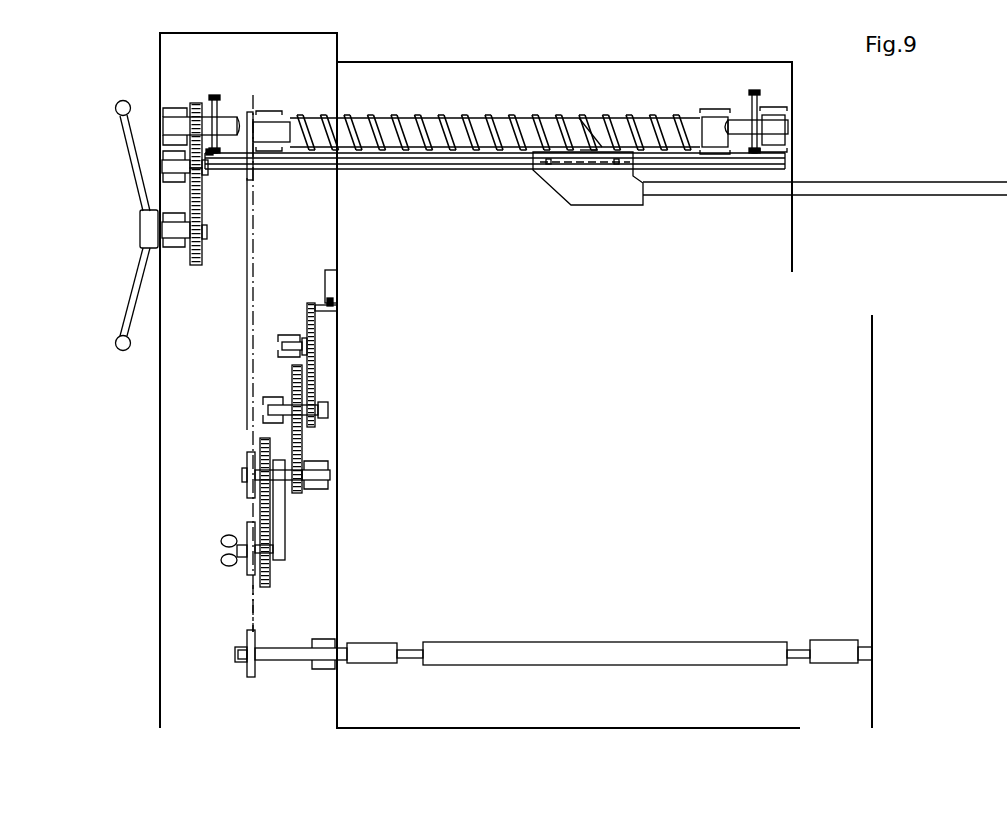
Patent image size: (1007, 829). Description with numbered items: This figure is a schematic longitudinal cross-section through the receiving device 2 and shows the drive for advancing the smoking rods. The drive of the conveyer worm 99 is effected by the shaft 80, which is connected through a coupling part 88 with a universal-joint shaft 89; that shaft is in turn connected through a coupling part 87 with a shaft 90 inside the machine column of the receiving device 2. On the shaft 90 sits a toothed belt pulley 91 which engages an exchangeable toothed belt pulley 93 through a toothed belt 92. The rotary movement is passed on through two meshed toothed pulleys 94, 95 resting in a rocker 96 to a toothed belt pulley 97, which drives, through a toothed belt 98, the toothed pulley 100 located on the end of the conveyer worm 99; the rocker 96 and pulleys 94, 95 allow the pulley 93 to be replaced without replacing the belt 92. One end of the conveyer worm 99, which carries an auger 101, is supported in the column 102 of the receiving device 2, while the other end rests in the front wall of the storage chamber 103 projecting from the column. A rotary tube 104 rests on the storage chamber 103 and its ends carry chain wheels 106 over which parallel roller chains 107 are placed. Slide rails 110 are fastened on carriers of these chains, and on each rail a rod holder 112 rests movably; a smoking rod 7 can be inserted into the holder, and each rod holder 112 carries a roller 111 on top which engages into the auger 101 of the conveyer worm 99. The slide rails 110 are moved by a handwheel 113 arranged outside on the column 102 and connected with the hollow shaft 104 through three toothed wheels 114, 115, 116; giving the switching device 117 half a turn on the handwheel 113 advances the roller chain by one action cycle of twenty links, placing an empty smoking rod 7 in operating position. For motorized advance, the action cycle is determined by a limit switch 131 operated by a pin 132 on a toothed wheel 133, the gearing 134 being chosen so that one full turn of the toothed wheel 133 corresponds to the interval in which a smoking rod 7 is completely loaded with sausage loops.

The receiving device 2 is at (622, 411).
The smoking rod 7 is at (956, 190).
The shaft 80 is at (862, 663).
The coupling part 87 is at (378, 657).
The coupling part 88 is at (823, 663).
The universal-joint shaft 89 is at (607, 660).
The shaft 90 is at (295, 663).
The toothed belt pulley 91 is at (247, 643).
The toothed belt 92 is at (250, 606).
The exchangeable toothed belt pulley 93 is at (245, 568).
The toothed pulley 94 is at (262, 516).
The toothed pulley 95 is at (262, 500).
The rocker 96 is at (280, 517).
The toothed belt pulley 97 is at (247, 462).
The toothed belt 98 is at (247, 373).
The conveyer worm 99 is at (532, 130).
The toothed pulley 100 is at (251, 120).
The auger 101 is at (593, 147).
The column 102 is at (158, 52).
The storage chamber 103 is at (650, 62).
The rotary tube 104 is at (175, 124).
The chain wheel 106 is at (218, 108).
The roller chain 107 is at (210, 98).
The slide rail 110 is at (433, 166).
The roller 111 is at (590, 153).
The rod holder 112 is at (612, 187).
The handwheel 113 is at (162, 170).
The toothed wheel 114 is at (190, 252).
The toothed wheel 115 is at (200, 180).
The toothed wheel 116 is at (190, 147).
The switching device 117 is at (135, 233).
The limit switch 131 is at (329, 288).
The pin 132 is at (331, 310).
The toothed wheel 133 is at (315, 380).
The gearing 134 is at (322, 435).